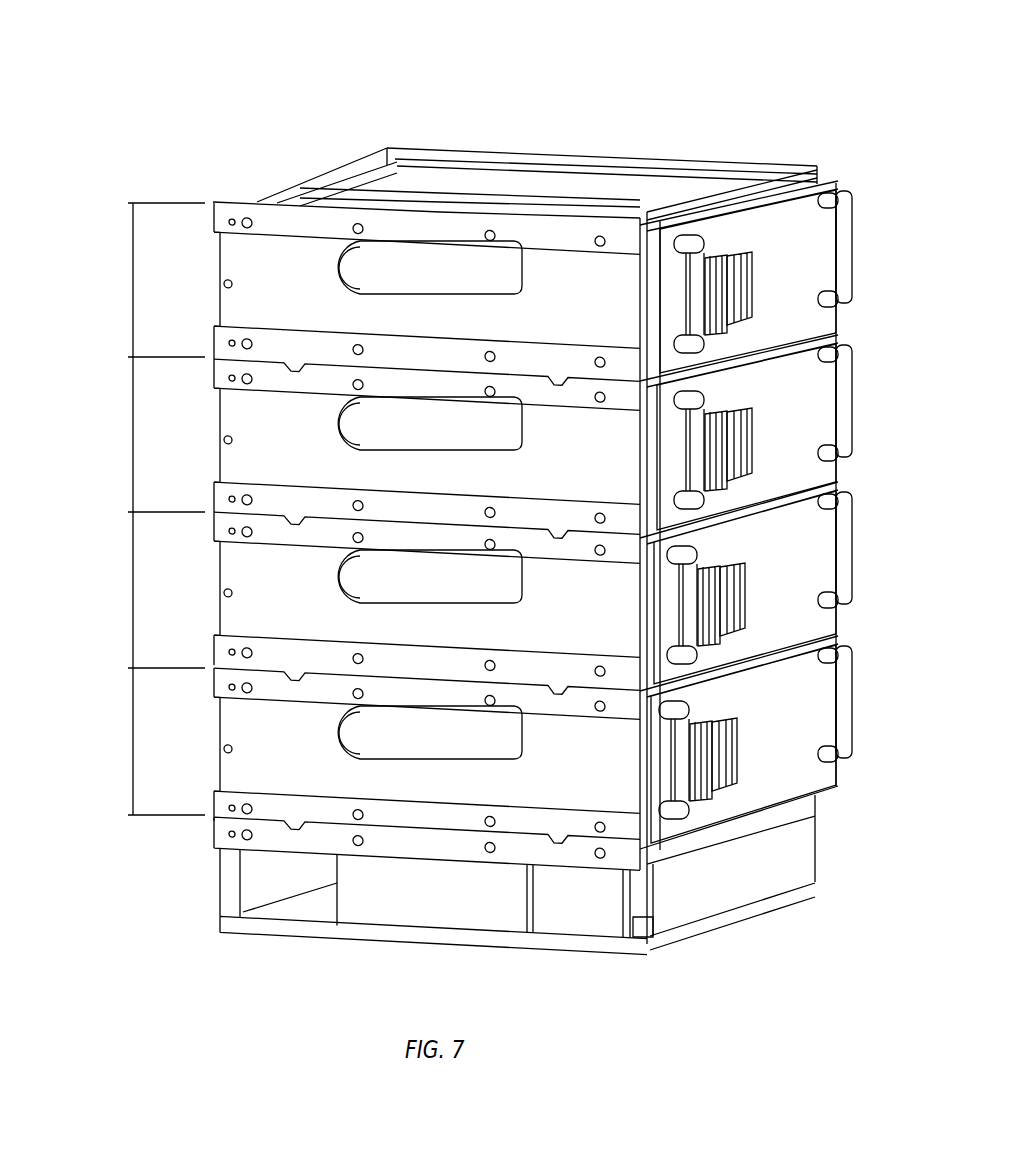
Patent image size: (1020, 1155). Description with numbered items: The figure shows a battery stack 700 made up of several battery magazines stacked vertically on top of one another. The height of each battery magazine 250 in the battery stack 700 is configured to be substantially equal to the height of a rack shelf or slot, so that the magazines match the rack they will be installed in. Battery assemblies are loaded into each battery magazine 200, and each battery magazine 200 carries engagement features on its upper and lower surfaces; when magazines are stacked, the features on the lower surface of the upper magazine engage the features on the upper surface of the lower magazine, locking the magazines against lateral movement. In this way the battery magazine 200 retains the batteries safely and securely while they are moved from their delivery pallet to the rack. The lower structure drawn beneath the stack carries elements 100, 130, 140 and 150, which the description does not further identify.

The battery stack 700 is at (802, 95).
The battery magazine 250 is at (133, 281).
The battery magazine 200 is at (798, 717).
The base frame 100 is at (527, 957).
The base frame corner post 130 is at (630, 920).
The base frame support leg 140 is at (267, 895).
The base frame side panel 150 is at (717, 893).